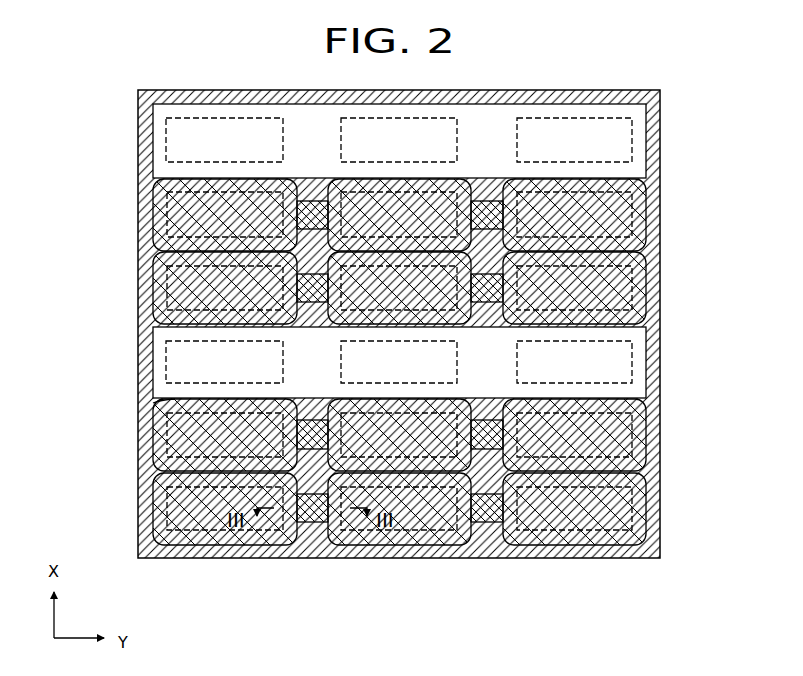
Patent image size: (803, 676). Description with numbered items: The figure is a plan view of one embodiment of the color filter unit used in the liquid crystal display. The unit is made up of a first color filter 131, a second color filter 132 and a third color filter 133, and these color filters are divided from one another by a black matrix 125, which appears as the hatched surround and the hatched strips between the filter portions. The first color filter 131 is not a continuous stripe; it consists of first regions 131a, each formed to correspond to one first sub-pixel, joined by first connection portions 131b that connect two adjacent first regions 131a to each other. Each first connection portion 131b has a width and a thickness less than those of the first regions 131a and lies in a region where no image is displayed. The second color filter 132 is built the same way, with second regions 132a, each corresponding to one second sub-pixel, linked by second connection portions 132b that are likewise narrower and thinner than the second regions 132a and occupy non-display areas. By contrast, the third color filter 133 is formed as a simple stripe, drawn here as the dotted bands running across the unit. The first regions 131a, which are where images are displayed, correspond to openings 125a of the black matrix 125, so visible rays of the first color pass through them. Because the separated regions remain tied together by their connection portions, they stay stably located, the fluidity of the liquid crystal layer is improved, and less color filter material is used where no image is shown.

The black matrix 125 is at (653, 403).
The opening of black matrix 125a is at (153, 403).
The first color filter 131 is at (399, 418).
The first region 131a is at (267, 540).
The first connection portion 131b is at (312, 516).
The second color filter 132 is at (419, 418).
The second region 132a is at (445, 462).
The second connection portion 132b is at (483, 443).
The third color filter 133 is at (642, 363).